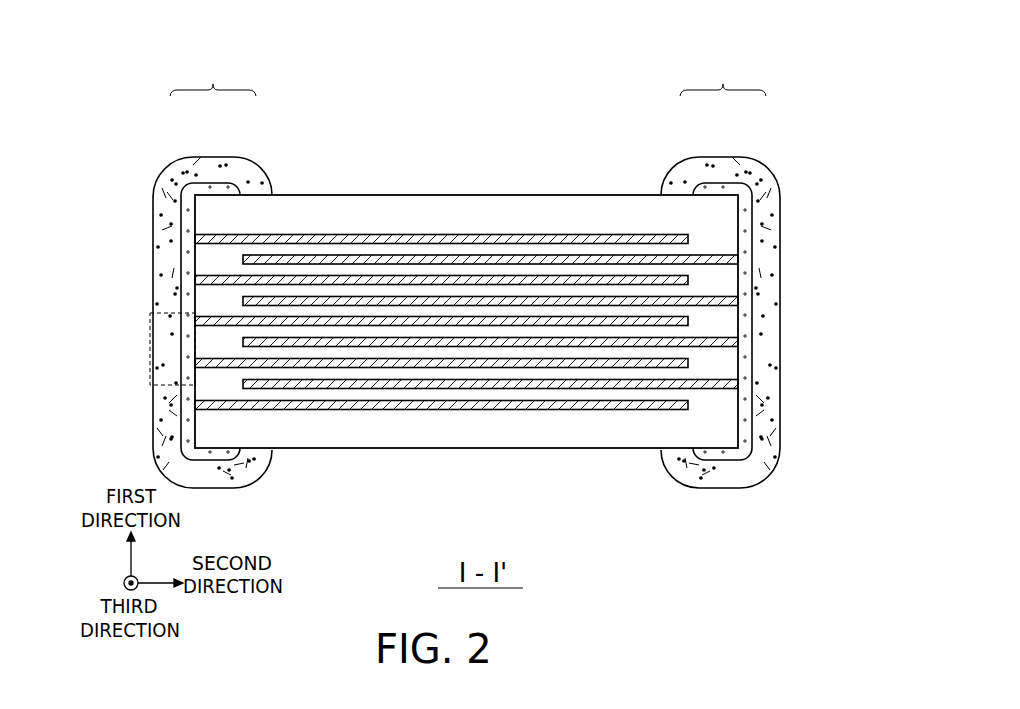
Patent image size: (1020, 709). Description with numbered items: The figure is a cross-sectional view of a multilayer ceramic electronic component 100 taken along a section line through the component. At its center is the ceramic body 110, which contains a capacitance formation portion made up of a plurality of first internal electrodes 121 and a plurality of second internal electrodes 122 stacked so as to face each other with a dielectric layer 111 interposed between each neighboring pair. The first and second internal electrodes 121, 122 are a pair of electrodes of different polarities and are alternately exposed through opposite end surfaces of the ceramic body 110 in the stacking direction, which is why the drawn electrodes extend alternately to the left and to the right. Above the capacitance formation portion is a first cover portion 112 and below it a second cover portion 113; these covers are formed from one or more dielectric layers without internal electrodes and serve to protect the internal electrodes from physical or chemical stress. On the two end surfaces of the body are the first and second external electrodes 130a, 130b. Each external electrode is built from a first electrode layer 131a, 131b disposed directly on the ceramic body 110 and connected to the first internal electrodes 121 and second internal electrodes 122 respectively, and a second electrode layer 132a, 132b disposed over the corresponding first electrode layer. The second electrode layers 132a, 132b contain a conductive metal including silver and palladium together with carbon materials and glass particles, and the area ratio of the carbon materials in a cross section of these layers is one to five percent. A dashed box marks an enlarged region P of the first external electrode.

The multilayer ceramic electronic component 100 is at (585, 41).
The ceramic body 110 is at (614, 195).
The dielectric layer 111 is at (302, 244).
The first cover portion 112 is at (538, 211).
The second cover portion 113 is at (538, 438).
The first internal electrode 121 is at (374, 236).
The second internal electrode 122 is at (410, 256).
The first external electrode 130a is at (213, 79).
The second external electrode 130b is at (723, 79).
The first electrode layer 131a is at (222, 183).
The first electrode layer 131b is at (710, 187).
The second electrode layer 132a is at (184, 157).
The second electrode layer 132b is at (750, 157).
The region P is at (150, 326).